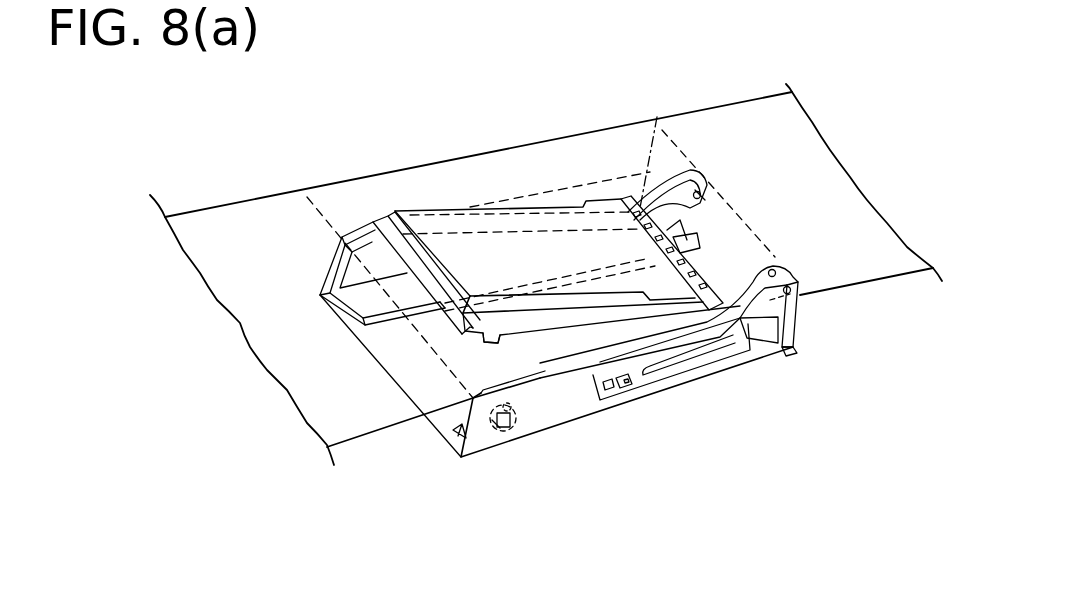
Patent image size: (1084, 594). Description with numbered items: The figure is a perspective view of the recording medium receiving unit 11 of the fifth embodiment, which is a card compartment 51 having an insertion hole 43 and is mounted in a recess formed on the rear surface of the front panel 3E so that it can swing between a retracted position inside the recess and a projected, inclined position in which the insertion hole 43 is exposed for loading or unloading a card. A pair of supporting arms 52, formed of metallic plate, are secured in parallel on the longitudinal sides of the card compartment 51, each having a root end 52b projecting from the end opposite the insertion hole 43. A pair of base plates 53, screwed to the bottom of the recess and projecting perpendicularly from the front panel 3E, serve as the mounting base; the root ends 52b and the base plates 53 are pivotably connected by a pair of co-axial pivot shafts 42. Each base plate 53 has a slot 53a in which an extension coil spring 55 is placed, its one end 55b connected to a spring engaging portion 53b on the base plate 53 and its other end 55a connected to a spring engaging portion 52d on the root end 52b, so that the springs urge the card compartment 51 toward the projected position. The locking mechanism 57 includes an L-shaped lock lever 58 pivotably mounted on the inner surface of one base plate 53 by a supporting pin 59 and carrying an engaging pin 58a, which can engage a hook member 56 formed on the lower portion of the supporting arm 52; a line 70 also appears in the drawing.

The front panel 3E is at (812, 122).
The recording medium receiving unit 11 is at (716, 393).
The pivot shaft 42 is at (707, 203).
The insertion hole 43 is at (380, 220).
The card compartment 51 is at (478, 207).
The supporting arm 52 is at (571, 207).
The root end 52b is at (708, 208).
The spring engaging portion 52d is at (797, 353).
The base plate 53 is at (340, 268).
The slot 53a is at (603, 387).
The spring engaging portion 53b is at (630, 385).
The extension coil spring 55 is at (722, 352).
The other end 55a is at (735, 352).
The one end 55b is at (712, 392).
The hook member 56 is at (495, 345).
The locking mechanism 57 is at (513, 447).
The lock lever 58 is at (507, 440).
The engaging pin 58a is at (500, 433).
The supporting pin 59 is at (517, 422).
The rotation axis 70 is at (657, 117).